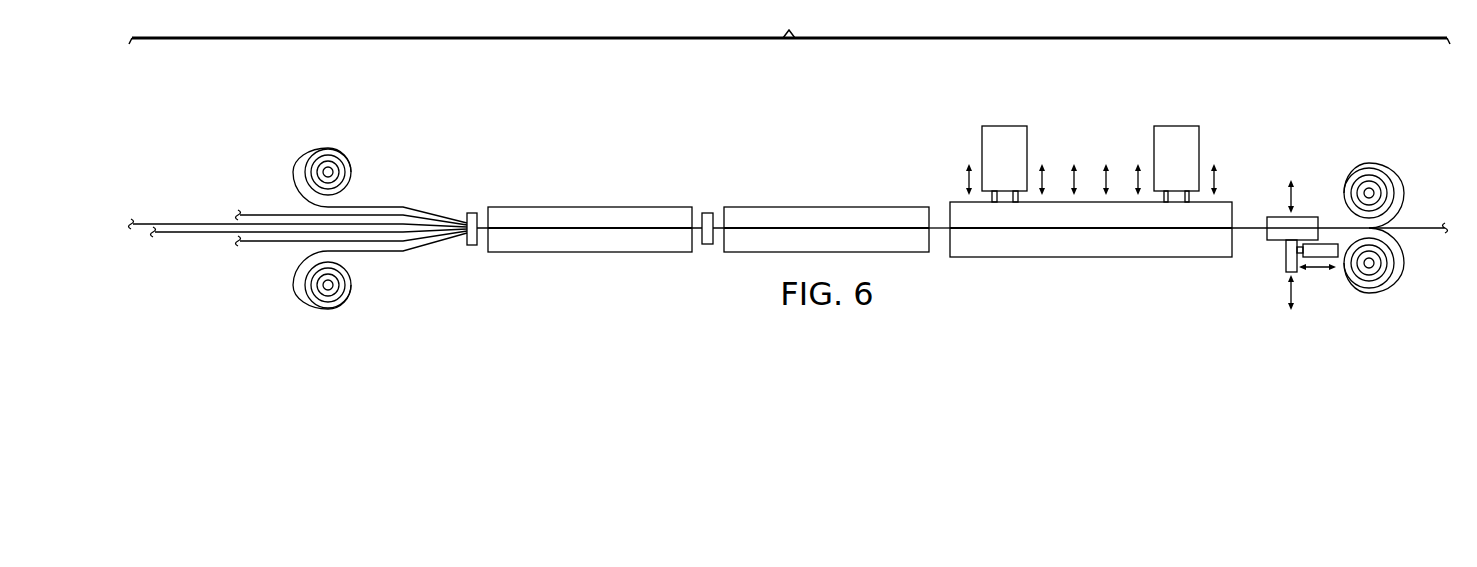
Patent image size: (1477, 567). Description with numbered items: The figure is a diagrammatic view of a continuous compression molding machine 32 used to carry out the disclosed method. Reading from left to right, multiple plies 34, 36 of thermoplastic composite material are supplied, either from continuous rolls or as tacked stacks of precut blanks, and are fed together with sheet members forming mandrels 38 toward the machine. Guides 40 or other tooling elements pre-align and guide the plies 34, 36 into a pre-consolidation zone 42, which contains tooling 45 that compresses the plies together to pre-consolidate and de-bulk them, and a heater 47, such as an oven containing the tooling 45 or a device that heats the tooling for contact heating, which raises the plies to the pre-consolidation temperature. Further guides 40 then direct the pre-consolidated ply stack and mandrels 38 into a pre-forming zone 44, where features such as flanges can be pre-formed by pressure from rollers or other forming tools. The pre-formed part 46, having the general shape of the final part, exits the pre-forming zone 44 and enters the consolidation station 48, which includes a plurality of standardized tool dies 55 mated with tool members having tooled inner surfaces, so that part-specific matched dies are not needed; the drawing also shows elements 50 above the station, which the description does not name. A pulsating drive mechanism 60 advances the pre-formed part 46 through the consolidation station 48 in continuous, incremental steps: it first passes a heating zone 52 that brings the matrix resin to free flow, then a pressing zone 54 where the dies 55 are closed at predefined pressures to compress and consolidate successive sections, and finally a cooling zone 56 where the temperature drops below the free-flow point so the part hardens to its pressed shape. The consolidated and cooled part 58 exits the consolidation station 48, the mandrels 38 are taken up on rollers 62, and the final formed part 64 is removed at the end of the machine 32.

The CCM machine 32 is at (789, 22).
The plies 34 is at (187, 222).
The plies 36 is at (262, 212).
The mandrels 38 is at (331, 148).
The guides 40 is at (471, 212).
The pre-consolidation zone 42 is at (558, 157).
The pre-forming zone 44 is at (859, 157).
The tooling 45 is at (533, 253).
The pre-formed part 46 is at (941, 222).
The heater 47 is at (644, 253).
The consolidation station 48 is at (1108, 106).
The heaters 50 is at (1005, 125).
The heating zone 52 is at (1015, 258).
The pressing zone 54 is at (1128, 258).
The standardized tool dies 55 is at (1224, 201).
The cooling zone 56 is at (1192, 258).
The consolidated and cooled part 58 is at (1243, 233).
The pulsating drive mechanism 60 is at (1305, 216).
The rollers 62 is at (1370, 167).
The final formed part 64 is at (1422, 227).